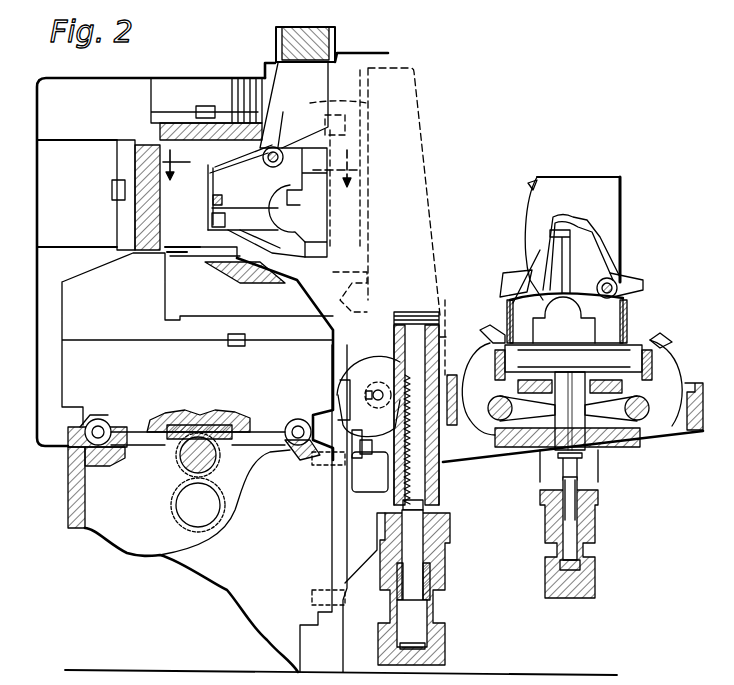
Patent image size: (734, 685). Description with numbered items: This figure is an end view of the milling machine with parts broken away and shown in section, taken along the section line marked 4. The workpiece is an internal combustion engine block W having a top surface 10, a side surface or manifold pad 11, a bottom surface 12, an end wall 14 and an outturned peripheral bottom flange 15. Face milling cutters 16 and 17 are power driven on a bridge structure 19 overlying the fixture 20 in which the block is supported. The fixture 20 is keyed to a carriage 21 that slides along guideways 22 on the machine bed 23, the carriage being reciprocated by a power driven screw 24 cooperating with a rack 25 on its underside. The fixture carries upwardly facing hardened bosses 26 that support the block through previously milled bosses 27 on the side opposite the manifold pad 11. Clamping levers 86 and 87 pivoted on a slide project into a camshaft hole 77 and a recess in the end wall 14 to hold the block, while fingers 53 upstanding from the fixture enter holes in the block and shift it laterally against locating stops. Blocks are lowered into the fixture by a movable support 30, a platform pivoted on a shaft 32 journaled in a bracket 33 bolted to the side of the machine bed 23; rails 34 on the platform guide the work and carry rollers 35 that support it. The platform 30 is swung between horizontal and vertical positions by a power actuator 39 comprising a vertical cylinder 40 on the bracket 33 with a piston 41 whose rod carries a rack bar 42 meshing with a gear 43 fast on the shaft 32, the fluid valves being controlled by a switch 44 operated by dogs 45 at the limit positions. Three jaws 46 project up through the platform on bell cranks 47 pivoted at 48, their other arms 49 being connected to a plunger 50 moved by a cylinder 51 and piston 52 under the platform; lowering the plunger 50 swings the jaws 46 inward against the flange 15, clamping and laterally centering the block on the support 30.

The section line 4- 4 is at (261, 168).
The top surface 10 is at (597, 163).
The side surface 11 is at (624, 228).
The bottom surface 12 is at (572, 370).
The end wall 14 is at (286, 180).
The peripheral bottom flange 15 is at (573, 362).
The face milling cutter 16 is at (135, 160).
The face milling cutter 17 is at (168, 127).
The bridge structure 19 is at (137, 80).
The fixture 20 is at (160, 302).
The carriage 21 is at (72, 368).
The guideways 22 is at (101, 428).
The machine bed 23 is at (310, 627).
The power driven screw 24 is at (178, 460).
The rack 25 is at (218, 422).
The hardened bosses 26 is at (178, 258).
The milled bosses 27 is at (177, 245).
The movable support 30 is at (421, 97).
The shaft 32 is at (355, 398).
The bracket 33 is at (336, 518).
The rails 34 is at (361, 112).
The rollers 35 is at (362, 183).
The power actuator 39 is at (453, 585).
The vertical cylinder 40 is at (433, 612).
The piston 41 is at (428, 642).
The rack bar 42 is at (422, 491).
The gear 43 is at (392, 358).
The switch 44 is at (360, 480).
The dogs 45 is at (340, 390).
The jaws 46 is at (326, 122).
The bell cranks 47 is at (488, 419).
The pivot 48 is at (499, 421).
The arms 49 is at (536, 432).
The plunger 50 is at (576, 380).
The cylinder 51 is at (580, 548).
The piston 52 is at (585, 565).
The fingers 53 is at (206, 262).
The camshaft hole 77 is at (645, 267).
The clamping lever 86 is at (213, 192).
The clamping lever 87 is at (272, 168).
The engine block W is at (619, 178).